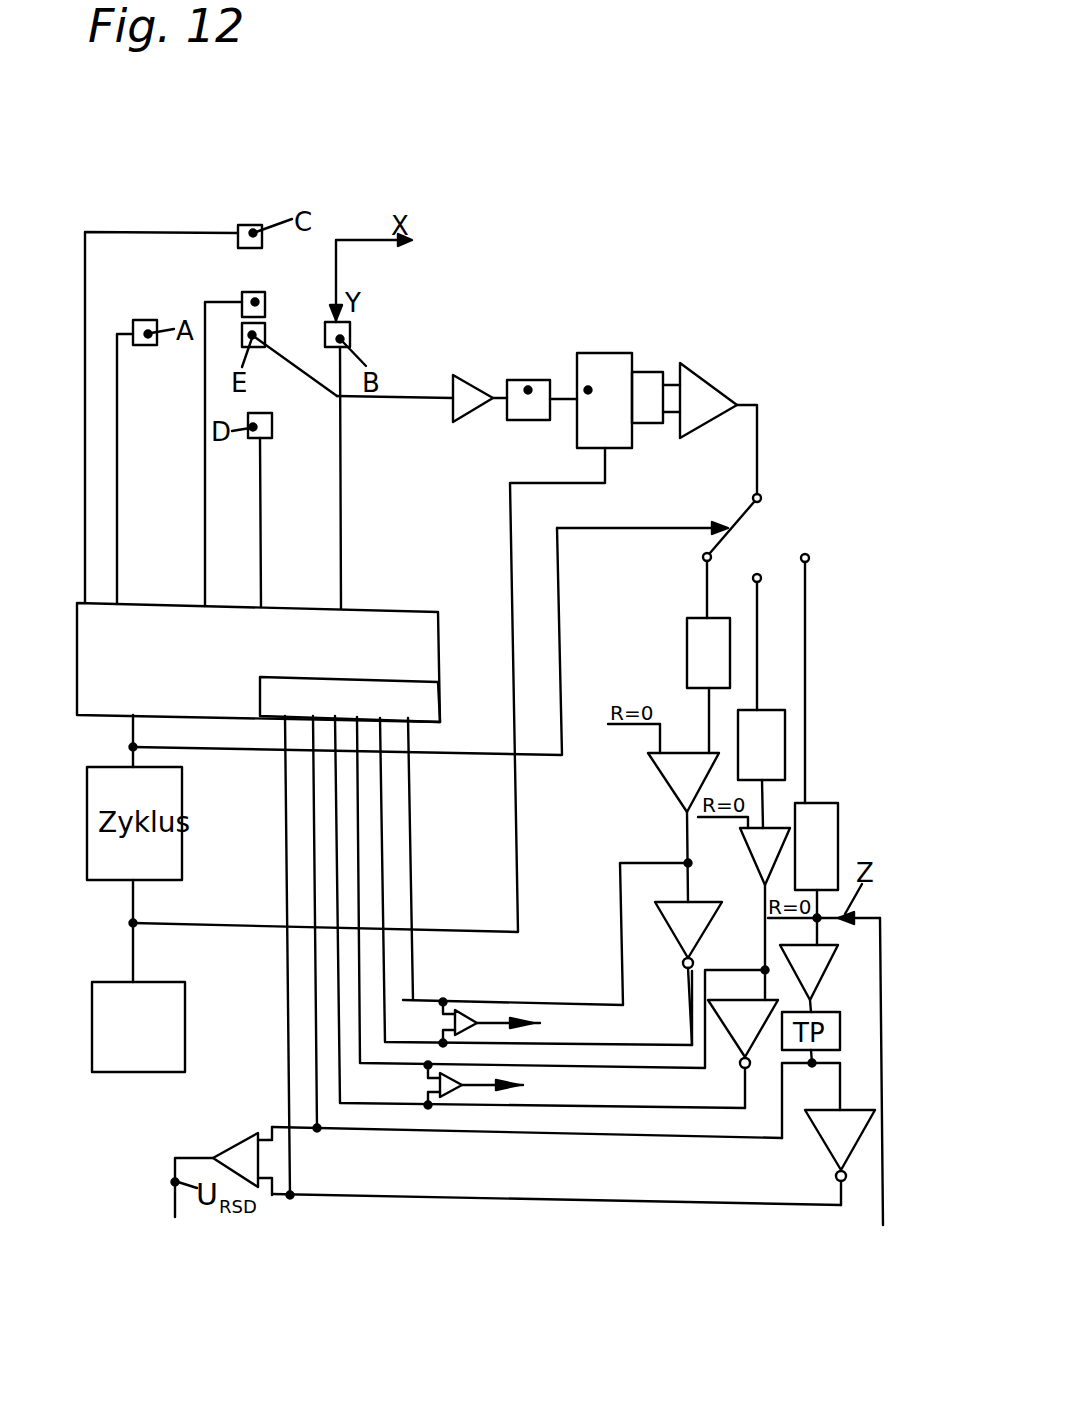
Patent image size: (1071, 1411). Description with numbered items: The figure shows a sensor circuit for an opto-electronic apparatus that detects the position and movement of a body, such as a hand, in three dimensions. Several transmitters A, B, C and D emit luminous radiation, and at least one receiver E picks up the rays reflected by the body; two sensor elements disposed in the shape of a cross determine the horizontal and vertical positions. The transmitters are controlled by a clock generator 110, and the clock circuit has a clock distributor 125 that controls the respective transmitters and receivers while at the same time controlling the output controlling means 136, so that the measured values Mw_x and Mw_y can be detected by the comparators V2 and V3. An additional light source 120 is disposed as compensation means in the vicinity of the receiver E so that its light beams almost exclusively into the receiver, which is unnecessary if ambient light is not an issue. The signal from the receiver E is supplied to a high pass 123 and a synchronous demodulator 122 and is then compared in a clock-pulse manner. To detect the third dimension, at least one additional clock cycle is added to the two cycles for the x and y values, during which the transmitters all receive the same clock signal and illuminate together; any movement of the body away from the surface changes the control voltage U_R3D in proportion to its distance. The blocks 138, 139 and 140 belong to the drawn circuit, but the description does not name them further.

The clock generator 110 is at (160, 1004).
The additional light source 120 is at (258, 301).
The synchronous demodulator 122 is at (590, 388).
The high pass 123 is at (530, 388).
The clock distributor 125 is at (258, 643).
The output controlling means 136 is at (382, 688).
The counter 138 is at (695, 646).
The counter 139 is at (783, 761).
The counter 140 is at (820, 823).
The comparator V2 is at (462, 1018).
The comparator V3 is at (449, 1093).